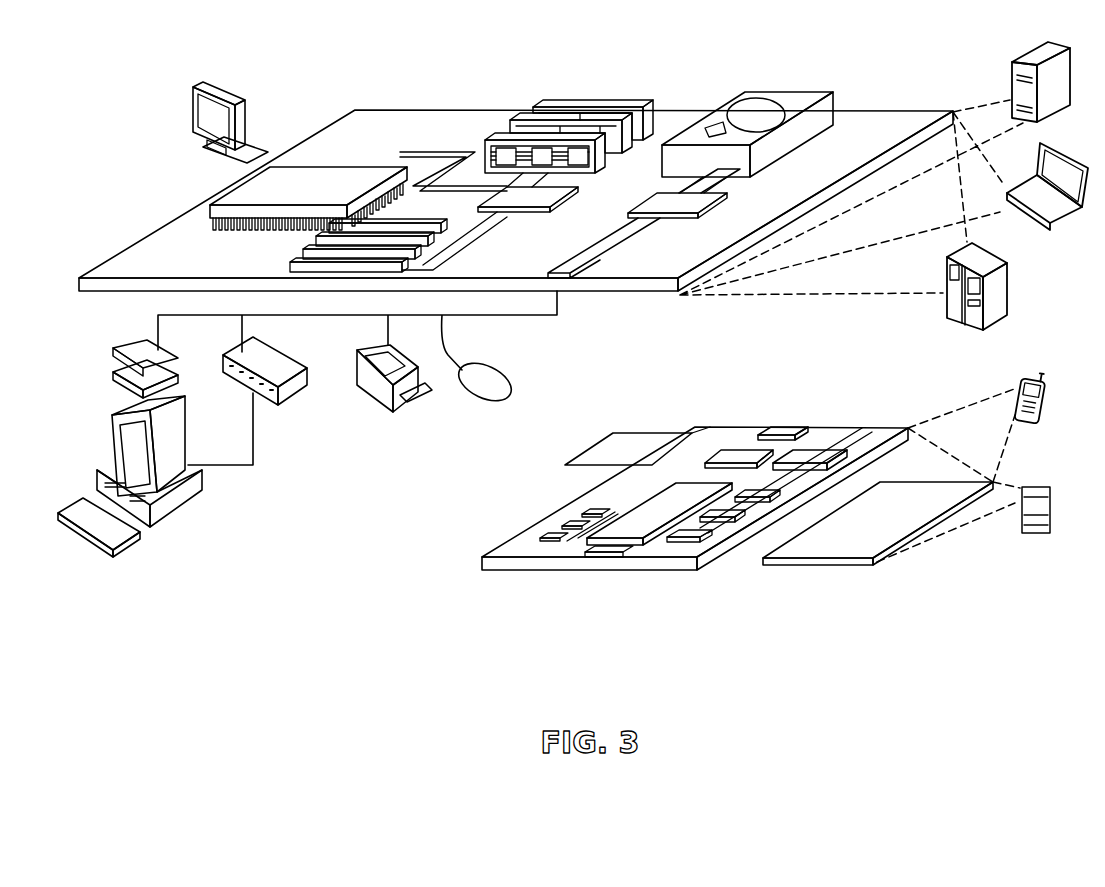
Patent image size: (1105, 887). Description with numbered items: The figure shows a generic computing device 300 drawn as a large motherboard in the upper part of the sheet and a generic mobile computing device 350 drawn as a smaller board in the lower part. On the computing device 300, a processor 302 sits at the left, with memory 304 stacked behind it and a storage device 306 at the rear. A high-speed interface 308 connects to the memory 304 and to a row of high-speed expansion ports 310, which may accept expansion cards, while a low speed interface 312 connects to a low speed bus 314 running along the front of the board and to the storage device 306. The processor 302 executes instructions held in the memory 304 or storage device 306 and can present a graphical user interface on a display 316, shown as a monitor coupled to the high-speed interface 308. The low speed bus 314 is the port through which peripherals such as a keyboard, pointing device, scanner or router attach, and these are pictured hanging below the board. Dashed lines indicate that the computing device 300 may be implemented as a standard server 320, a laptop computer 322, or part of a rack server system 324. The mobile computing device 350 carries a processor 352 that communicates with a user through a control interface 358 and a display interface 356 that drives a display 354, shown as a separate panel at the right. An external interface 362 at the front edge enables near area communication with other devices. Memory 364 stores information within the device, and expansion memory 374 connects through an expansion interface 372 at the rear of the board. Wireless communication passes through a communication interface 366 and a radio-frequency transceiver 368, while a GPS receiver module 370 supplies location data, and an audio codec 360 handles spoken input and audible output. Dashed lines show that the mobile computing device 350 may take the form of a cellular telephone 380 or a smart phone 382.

The generic computing device 300 is at (314, 46).
The processor 302 is at (225, 189).
The memory 304 is at (577, 107).
The storage device 306 is at (750, 92).
The high-speed interface 308 is at (530, 210).
The high-speed expansion ports 310 is at (292, 260).
The low speed interface 312 is at (660, 193).
The low speed bus 314 is at (560, 273).
The display 316 is at (202, 86).
The standard server 320 is at (1022, 53).
The laptop computer 322 is at (1075, 207).
The rack server system 324 is at (1010, 287).
The generic mobile computing device 350 is at (441, 585).
The processor 352 is at (642, 505).
The display 354 is at (928, 482).
The display interface 356 is at (705, 544).
The control interface 358 is at (735, 520).
The audio codec 360 is at (777, 496).
The external interface 362 is at (603, 572).
The memory 364 is at (562, 523).
The communication interface 366 is at (733, 448).
The transceiver 368 is at (822, 443).
The GPS receiver module 370 is at (785, 427).
The expansion interface 372 is at (692, 433).
The expansion memory 374 is at (613, 433).
The cellular telephone 380 is at (1027, 375).
The smart phone 382 is at (1043, 487).